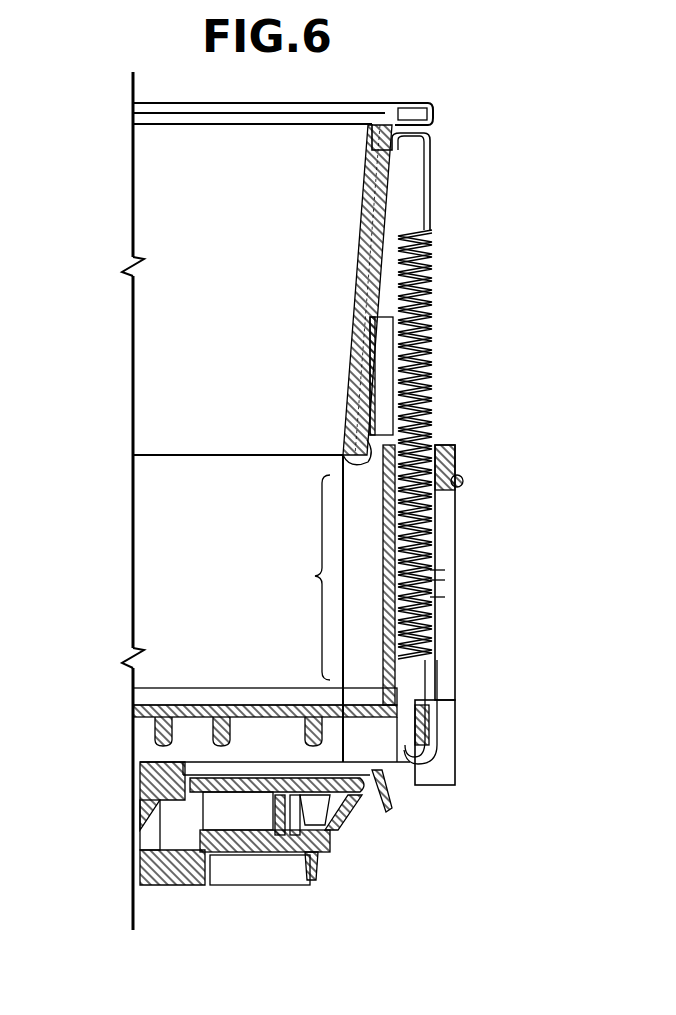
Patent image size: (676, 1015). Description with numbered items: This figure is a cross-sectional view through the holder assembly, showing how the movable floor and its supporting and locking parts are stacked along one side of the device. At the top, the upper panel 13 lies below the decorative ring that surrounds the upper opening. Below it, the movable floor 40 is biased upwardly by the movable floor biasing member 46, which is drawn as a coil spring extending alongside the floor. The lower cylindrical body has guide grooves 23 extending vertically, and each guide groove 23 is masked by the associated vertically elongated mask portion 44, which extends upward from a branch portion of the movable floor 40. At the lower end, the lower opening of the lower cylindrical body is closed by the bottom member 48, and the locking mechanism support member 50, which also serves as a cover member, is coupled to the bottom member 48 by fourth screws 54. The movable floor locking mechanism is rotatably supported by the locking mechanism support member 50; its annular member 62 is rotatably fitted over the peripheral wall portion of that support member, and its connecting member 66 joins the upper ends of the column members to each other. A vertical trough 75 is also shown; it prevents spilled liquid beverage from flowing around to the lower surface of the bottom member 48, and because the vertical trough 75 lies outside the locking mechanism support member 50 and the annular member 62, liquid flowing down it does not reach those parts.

The upper panel 13 is at (440, 122).
The guide groove 23 is at (306, 577).
The movable floor 40 is at (203, 705).
The vertically elongated mask portion 44 is at (383, 585).
The movable floor biasing member 46 is at (432, 338).
The bottom member 48 is at (153, 775).
The locking mechanism support member 50 is at (325, 845).
The fourth screw 54 is at (145, 880).
The annular member 62 is at (340, 822).
The connecting member 66 is at (465, 480).
The vertical trough 75 is at (392, 800).